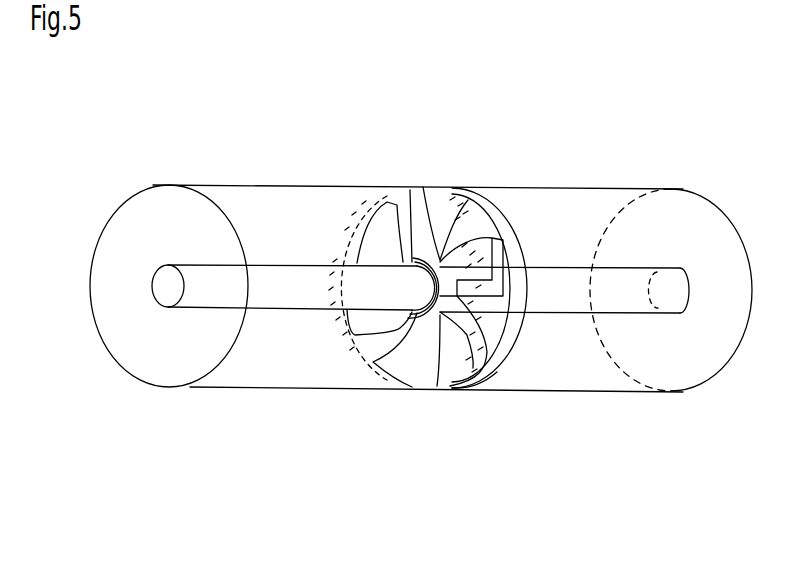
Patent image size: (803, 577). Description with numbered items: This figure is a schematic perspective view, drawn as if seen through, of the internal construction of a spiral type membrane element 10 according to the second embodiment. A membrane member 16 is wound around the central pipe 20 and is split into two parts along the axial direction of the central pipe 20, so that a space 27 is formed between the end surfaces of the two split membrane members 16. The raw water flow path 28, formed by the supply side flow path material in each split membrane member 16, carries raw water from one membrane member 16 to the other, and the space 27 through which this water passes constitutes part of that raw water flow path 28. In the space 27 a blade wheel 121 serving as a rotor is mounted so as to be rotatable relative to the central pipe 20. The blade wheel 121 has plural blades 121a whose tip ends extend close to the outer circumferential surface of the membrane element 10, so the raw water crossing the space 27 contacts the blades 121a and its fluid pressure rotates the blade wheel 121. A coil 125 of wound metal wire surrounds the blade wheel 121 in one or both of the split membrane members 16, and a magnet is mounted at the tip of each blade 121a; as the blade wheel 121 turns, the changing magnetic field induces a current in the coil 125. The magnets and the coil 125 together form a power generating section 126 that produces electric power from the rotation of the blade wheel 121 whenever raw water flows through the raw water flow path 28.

The spiral type membrane element 10 is at (640, 153).
The membrane member 16 is at (487, 390).
The central pipe 20 is at (273, 308).
The space 27 is at (497, 223).
The raw water flow path 28 is at (300, 225).
The blade wheel 121 is at (390, 202).
The blade 121a is at (448, 190).
The coil 125 is at (345, 200).
The power generating section 126 is at (523, 357).